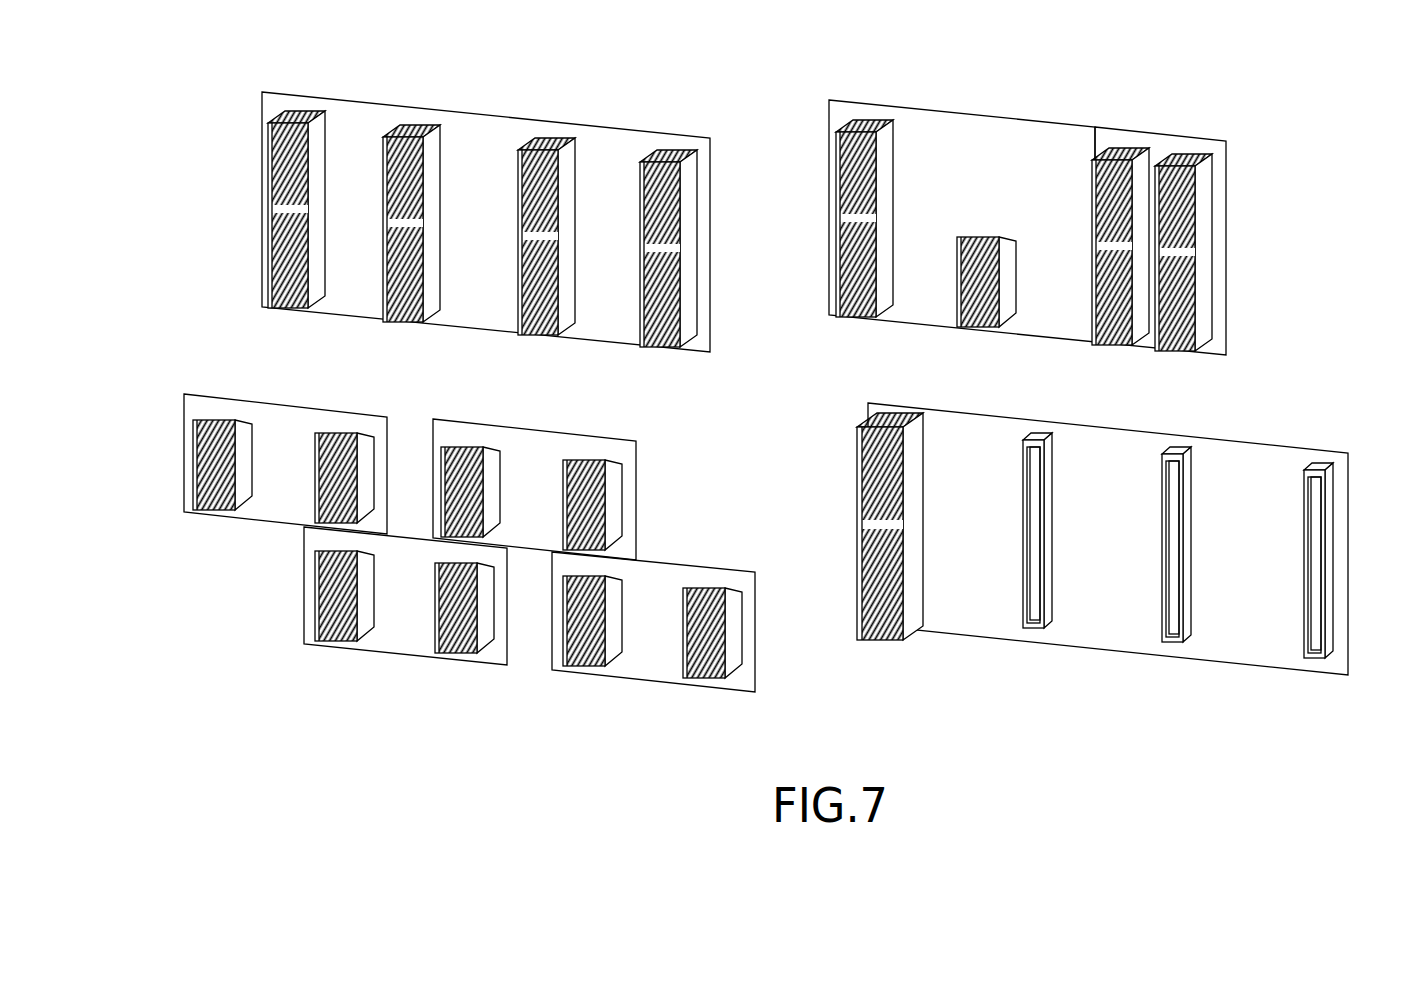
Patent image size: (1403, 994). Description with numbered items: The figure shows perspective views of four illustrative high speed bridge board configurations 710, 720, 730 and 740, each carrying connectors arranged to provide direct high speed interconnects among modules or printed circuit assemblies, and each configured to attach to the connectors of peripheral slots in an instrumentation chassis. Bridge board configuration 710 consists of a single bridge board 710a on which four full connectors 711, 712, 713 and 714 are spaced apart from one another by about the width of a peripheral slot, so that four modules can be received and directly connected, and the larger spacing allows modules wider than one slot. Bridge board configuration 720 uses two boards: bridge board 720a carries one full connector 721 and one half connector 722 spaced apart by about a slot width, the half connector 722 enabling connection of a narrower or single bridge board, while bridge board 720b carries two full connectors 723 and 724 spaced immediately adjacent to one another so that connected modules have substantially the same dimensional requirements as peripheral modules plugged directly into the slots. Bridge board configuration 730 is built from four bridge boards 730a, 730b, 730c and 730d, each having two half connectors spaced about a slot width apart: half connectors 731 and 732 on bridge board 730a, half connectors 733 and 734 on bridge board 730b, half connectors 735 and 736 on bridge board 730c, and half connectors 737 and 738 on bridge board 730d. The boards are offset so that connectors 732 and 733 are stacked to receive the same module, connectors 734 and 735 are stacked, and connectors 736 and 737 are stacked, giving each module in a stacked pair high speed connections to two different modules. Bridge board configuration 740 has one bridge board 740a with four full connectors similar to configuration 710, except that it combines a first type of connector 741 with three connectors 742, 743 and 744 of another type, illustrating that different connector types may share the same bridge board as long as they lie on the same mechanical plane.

The bridge board configuration 710 is at (446, 212).
The bridge board 710a is at (352, 118).
The full connector 711 is at (275, 237).
The full connector 712 is at (388, 296).
The full connector 713 is at (522, 302).
The full connector 714 is at (645, 313).
The bridge board configuration 720 is at (1043, 228).
The bridge board 720a is at (968, 140).
The bridge board 720b is at (1218, 203).
The full connector 721 is at (843, 262).
The half connector 722 is at (958, 290).
The full connector 723 is at (1102, 312).
The full connector 724 is at (1160, 325).
The bridge board configuration 730 is at (439, 549).
The bridge board 730a is at (243, 410).
The bridge board 730b is at (395, 635).
The bridge board 730c is at (548, 447).
The bridge board 730d is at (660, 575).
The half connector 731 is at (198, 462).
The half connector 732 is at (336, 445).
The half connector 733 is at (320, 598).
The half connector 734 is at (445, 648).
The half connector 735 is at (455, 452).
The half connector 736 is at (610, 500).
The half connector 737 is at (567, 652).
The half connector 738 is at (700, 672).
The bridge board configuration 740 is at (1099, 562).
The bridge board 740a is at (978, 615).
The connector of a first type 741 is at (860, 630).
The connector of another type 742 is at (1050, 615).
The connector of another type 743 is at (1185, 620).
The connector of another type 744 is at (1328, 640).